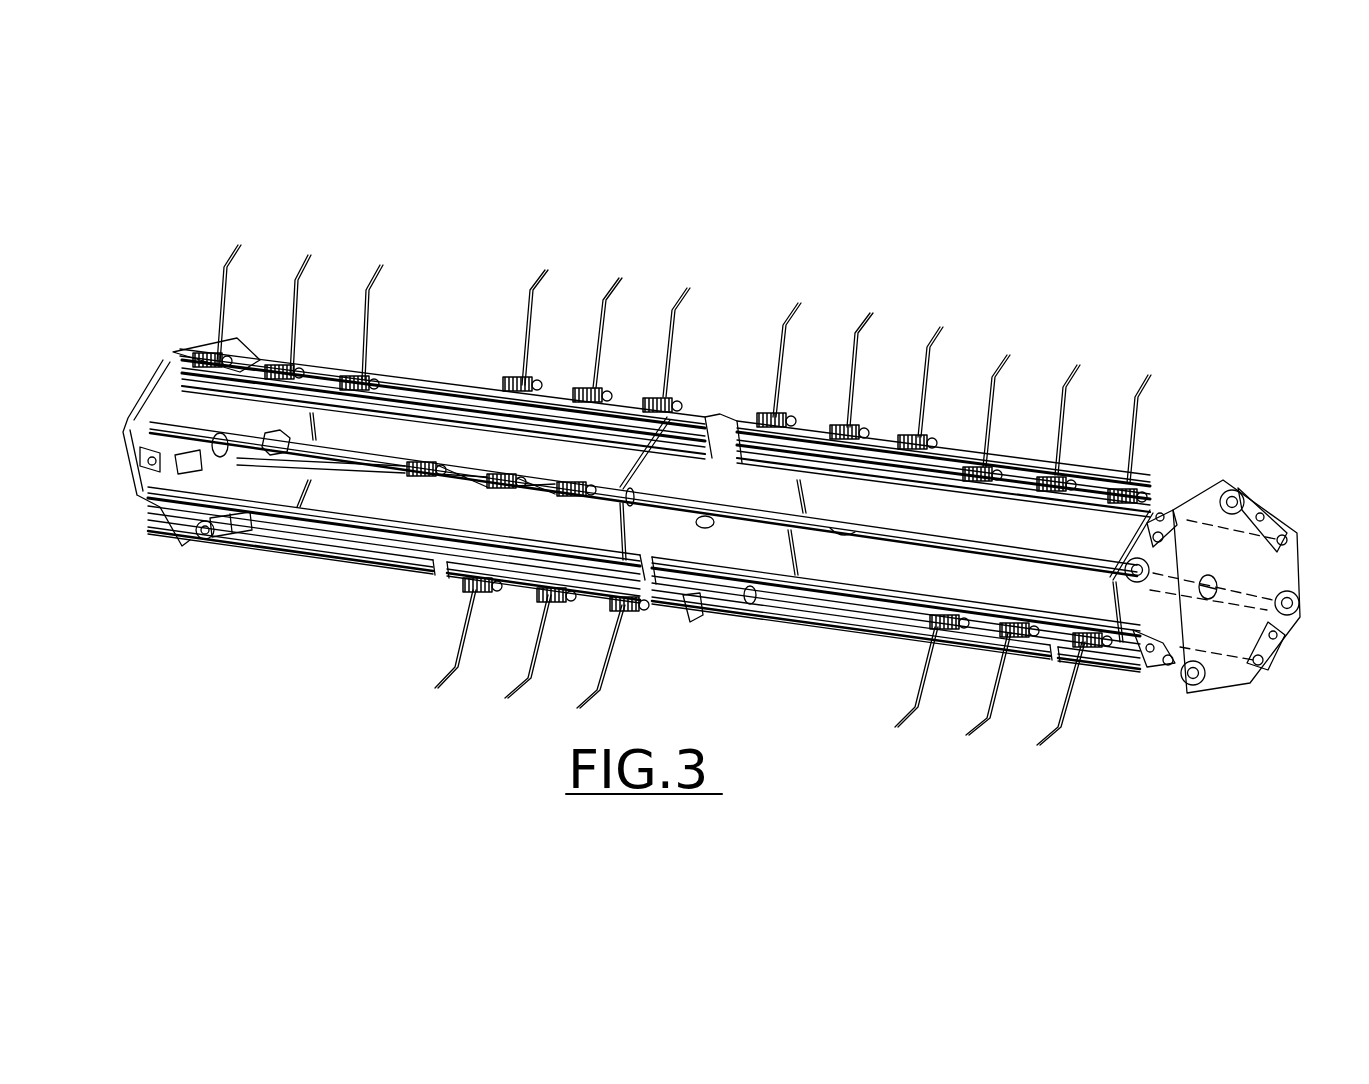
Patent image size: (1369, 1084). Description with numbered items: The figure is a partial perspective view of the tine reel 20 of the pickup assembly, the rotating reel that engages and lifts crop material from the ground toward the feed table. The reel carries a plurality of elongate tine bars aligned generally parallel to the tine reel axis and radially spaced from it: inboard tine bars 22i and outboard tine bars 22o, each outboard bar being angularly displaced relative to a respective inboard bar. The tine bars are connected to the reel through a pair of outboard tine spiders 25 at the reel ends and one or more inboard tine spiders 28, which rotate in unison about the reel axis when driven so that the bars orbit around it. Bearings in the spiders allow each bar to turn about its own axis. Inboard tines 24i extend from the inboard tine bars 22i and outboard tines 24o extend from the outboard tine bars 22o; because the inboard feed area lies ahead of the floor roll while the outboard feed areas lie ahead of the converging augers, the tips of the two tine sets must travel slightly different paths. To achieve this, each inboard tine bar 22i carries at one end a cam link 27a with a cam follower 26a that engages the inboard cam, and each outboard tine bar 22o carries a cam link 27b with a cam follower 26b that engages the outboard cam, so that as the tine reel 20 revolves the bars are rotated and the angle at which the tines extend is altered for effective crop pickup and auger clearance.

The tine reel 20 is at (912, 272).
The inboard tine bar 22i is at (800, 435).
The outboard tine bar 22o is at (388, 405).
The inboard tine 24i is at (617, 278).
The outboard tine 24o is at (308, 260).
The outboard tine spider 25 is at (1192, 497).
The cam follower 26a is at (132, 497).
The cam follower 26b is at (1237, 490).
The cam link 27a is at (140, 452).
The cam link 27b is at (1277, 512).
The inboard tine spider 28 is at (672, 598).